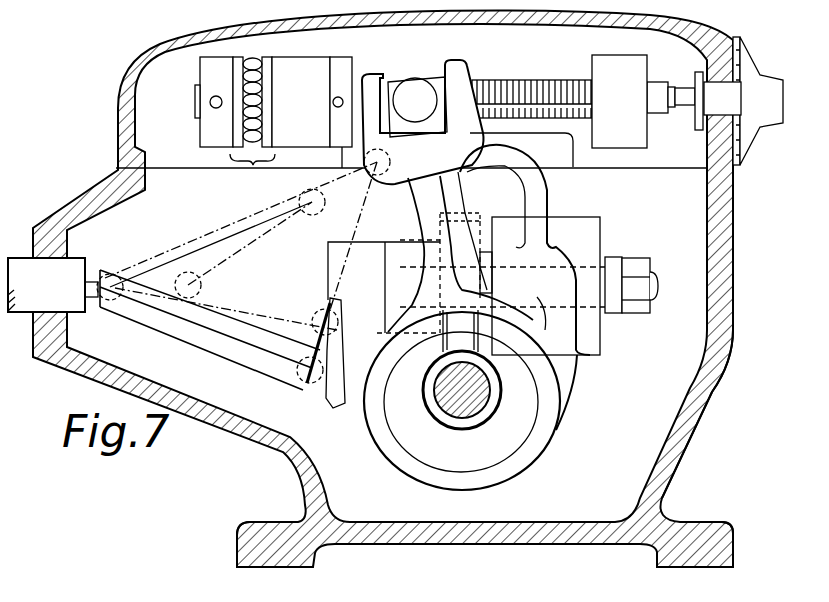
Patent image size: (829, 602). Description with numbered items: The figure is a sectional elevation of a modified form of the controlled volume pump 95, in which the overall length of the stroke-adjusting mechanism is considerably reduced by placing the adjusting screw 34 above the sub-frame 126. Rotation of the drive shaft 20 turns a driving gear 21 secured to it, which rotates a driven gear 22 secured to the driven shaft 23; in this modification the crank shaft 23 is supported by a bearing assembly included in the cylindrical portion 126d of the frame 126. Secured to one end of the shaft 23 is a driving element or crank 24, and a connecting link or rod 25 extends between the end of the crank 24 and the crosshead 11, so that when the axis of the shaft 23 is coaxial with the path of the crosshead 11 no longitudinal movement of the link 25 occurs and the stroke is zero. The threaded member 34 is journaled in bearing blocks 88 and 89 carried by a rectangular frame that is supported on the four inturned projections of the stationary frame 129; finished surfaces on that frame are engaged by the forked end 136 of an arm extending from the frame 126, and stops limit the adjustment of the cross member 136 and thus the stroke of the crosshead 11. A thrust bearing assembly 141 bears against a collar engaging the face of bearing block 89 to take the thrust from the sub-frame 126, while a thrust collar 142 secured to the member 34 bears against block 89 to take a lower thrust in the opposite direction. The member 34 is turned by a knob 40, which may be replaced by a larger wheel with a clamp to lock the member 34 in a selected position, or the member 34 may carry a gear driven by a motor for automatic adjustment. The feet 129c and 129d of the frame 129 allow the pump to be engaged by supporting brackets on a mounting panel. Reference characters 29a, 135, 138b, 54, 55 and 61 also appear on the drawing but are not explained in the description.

The pump 95 is at (50, 158).
The housing wall 29a is at (137, 63).
The knob 40 is at (750, 67).
The adjusting screw (threaded member) 34 is at (357, 87).
The bearing block 89 is at (300, 132).
The thrust bearing assembly 141 is at (250, 165).
The slide block 138b is at (390, 87).
The thrust collar 142 is at (346, 60).
The forked end (cross member) 136 is at (457, 77).
The pin 135 is at (413, 96).
The bearing block 88 is at (627, 122).
The sub-frame 126 is at (513, 160).
The cylindrical portion 126d is at (587, 227).
The driven shaft (crank shaft) 23 is at (653, 272).
The driven gear 22 is at (475, 213).
The driving gear 21 is at (495, 405).
The drive shaft 20 is at (453, 398).
The crosshead 11 is at (70, 267).
The pivot pin 54 is at (106, 280).
The connecting link (rod) 25 is at (214, 340).
The pivot pin 55 is at (303, 380).
The crank (driving element) 24 is at (342, 402).
The side wall 61 is at (678, 428).
The stationary frame 129 is at (462, 533).
The foot 129c is at (245, 543).
The foot 129d is at (668, 550).